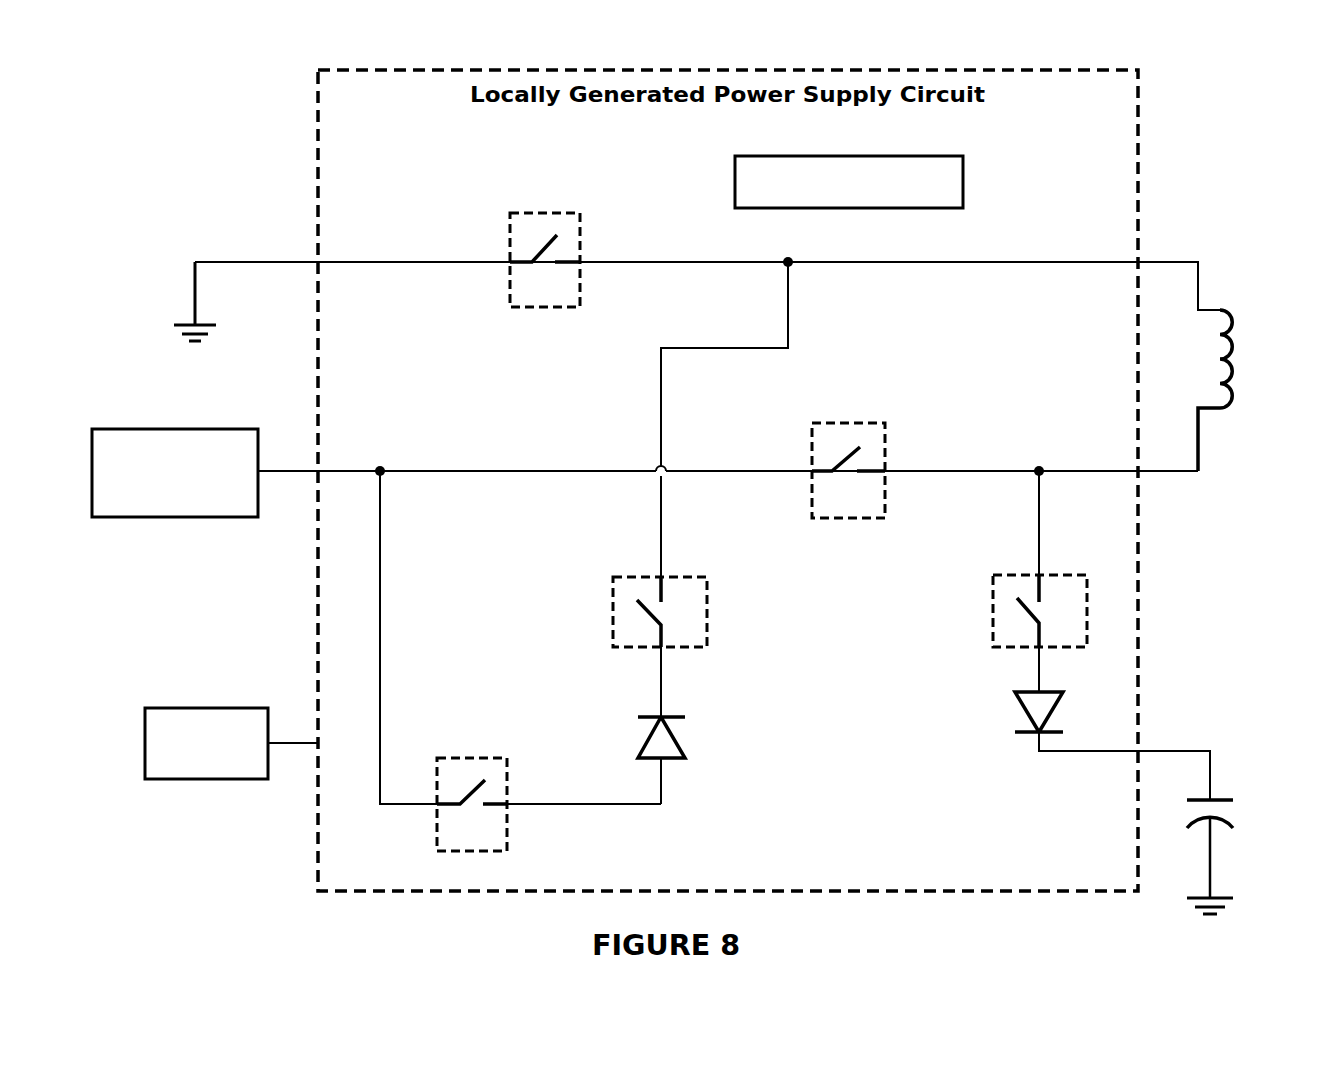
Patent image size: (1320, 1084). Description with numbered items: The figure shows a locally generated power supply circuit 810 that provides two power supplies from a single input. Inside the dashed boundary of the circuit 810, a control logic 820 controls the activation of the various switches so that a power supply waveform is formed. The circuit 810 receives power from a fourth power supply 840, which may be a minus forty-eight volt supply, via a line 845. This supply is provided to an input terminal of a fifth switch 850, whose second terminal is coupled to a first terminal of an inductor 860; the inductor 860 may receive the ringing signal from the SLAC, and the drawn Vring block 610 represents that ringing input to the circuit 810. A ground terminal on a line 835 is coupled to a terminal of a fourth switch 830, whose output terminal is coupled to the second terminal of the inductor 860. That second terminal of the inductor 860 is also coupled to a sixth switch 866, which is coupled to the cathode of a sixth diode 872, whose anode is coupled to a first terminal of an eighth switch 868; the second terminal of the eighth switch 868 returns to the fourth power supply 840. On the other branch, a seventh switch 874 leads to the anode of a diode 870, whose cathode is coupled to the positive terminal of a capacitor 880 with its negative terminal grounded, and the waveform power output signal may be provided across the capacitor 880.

The locally generated power supply circuit 810 is at (318, 163).
The control logic 820 is at (963, 180).
The line 835 is at (272, 262).
The fourth switch 830 is at (522, 307).
The inductor 860 is at (1220, 308).
The fourth power supply 840 is at (130, 517).
The line 845 is at (442, 470).
The fifth switch 850 is at (885, 430).
The sixth switch 866 is at (707, 590).
The sixth diode 872 is at (683, 742).
The eighth switch 868 is at (507, 832).
The Vring 610 is at (205, 779).
The seventh switch 874 is at (993, 618).
The diode 870 is at (1015, 706).
The capacitor 880 is at (1220, 798).